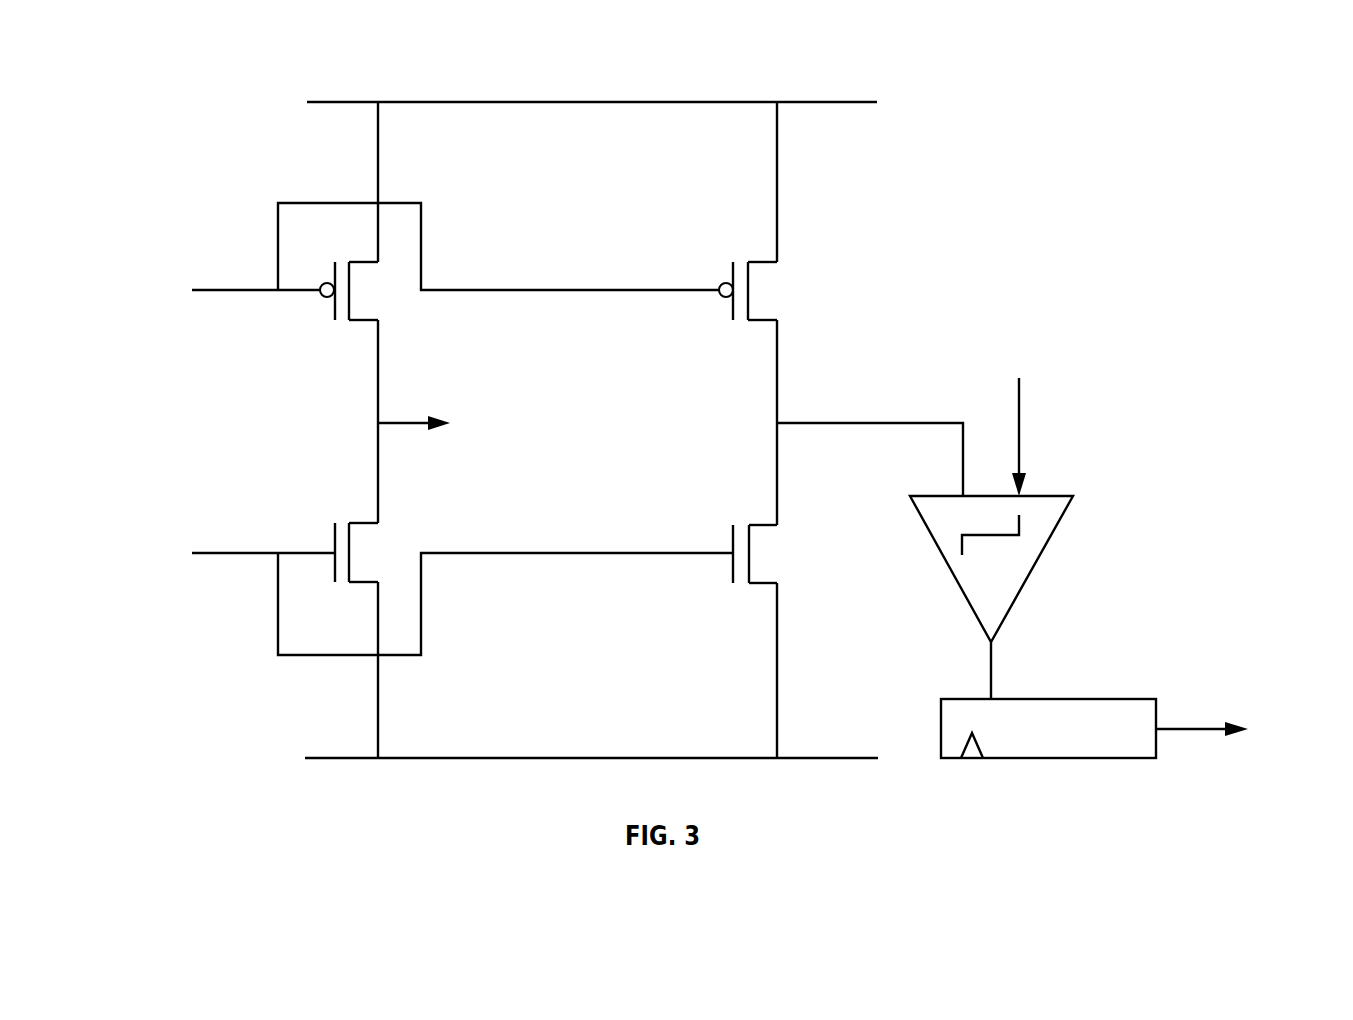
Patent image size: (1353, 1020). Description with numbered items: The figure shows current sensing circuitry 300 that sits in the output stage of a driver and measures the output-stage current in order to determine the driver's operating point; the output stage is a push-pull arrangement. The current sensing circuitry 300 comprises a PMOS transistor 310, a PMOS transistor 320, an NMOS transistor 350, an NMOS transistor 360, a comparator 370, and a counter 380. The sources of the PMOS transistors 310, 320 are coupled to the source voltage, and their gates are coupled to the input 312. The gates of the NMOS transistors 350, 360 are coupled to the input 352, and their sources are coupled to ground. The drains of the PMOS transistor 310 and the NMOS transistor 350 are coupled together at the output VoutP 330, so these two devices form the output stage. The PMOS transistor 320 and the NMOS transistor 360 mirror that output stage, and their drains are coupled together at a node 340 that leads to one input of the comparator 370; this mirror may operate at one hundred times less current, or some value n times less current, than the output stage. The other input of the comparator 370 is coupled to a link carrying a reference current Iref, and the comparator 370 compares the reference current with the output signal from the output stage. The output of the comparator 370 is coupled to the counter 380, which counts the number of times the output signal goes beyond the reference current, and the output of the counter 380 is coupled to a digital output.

The current sensing circuitry 300 is at (187, 114).
The PMOS transistor 310 is at (366, 263).
The input 312 is at (210, 291).
The PMOS transistor 320 is at (765, 263).
The output VoutP 330 is at (385, 424).
The current output node 340 is at (842, 423).
The NMOS transistor 350 is at (366, 524).
The input 352 is at (210, 554).
The NMOS transistor 360 is at (758, 527).
The comparator 370 is at (1053, 532).
The counter 380 is at (1130, 741).